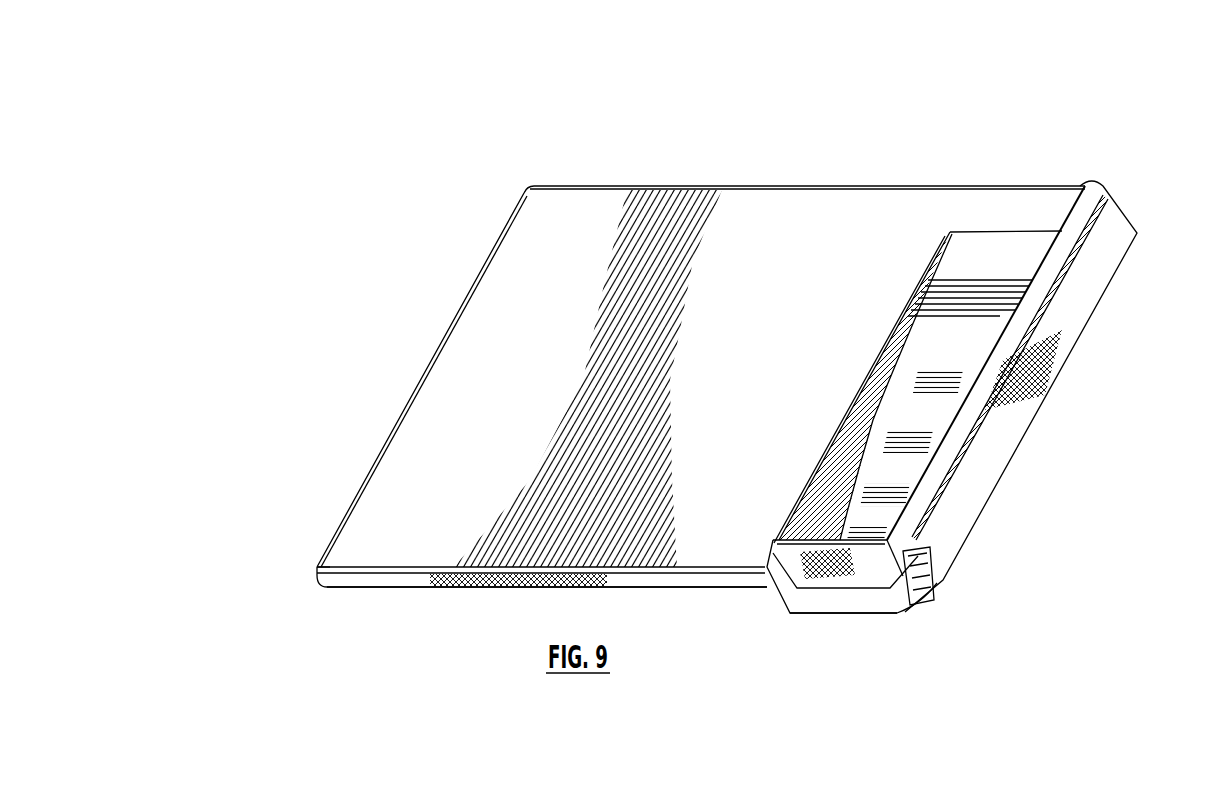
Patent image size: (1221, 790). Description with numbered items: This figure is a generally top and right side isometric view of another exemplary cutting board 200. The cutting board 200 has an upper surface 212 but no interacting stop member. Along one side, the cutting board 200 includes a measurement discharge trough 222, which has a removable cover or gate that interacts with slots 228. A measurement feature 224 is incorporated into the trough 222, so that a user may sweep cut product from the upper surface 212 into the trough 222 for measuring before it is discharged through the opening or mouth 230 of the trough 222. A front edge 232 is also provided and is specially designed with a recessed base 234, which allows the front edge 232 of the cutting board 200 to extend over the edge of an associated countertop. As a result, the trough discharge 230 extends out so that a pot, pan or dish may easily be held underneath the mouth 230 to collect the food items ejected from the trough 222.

The cutting board 200 is at (850, 116).
The upper surface 212 is at (811, 320).
The measurement discharge trough 222 is at (1036, 207).
The measurement feature 224 is at (958, 348).
The slots 228 is at (773, 557).
The opening or mouth 230 is at (817, 630).
The front edge 232 is at (371, 547).
The recessed base 234 is at (403, 582).